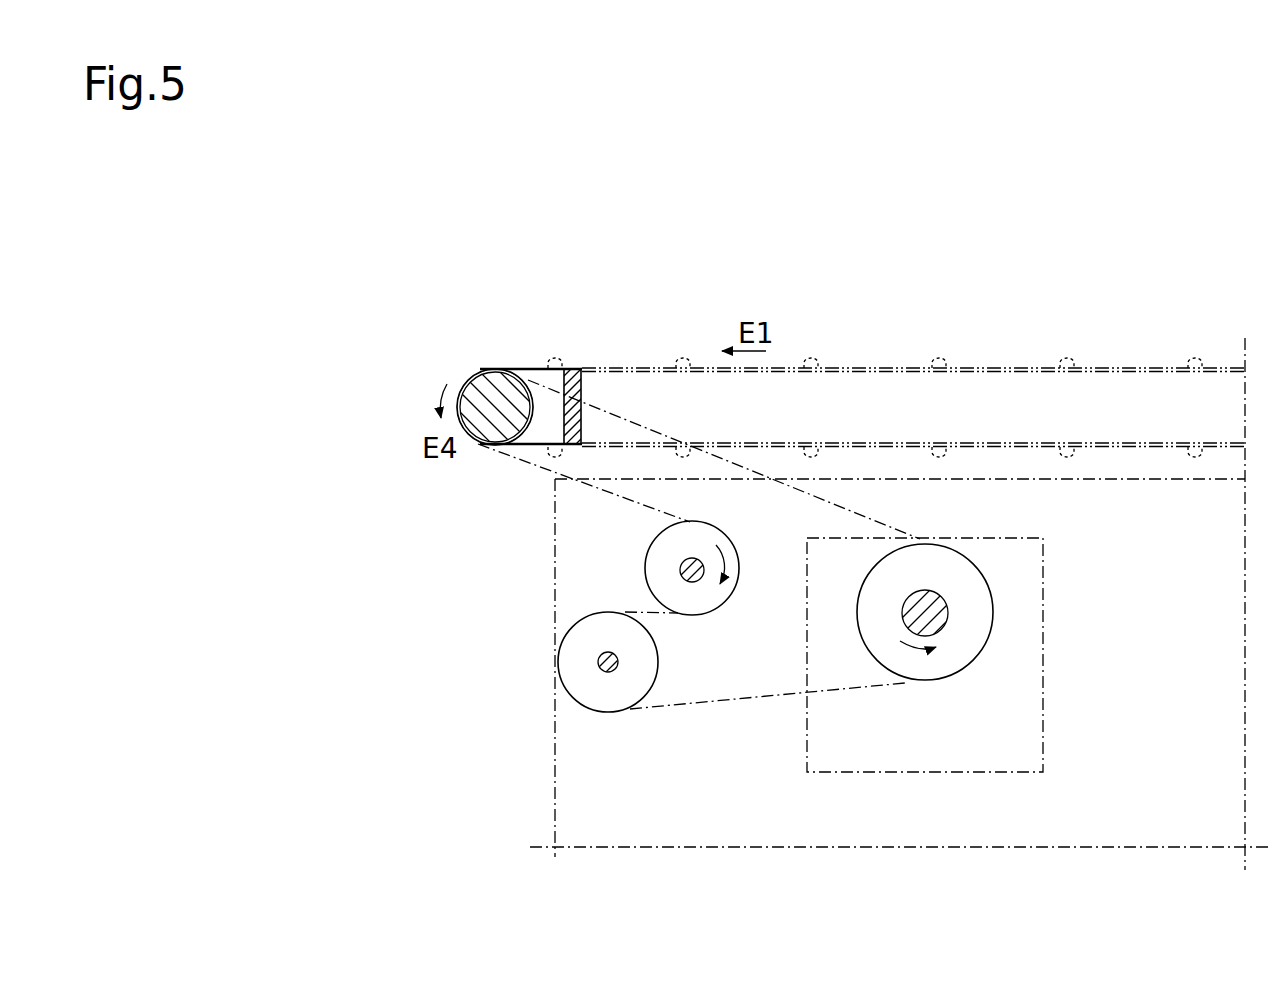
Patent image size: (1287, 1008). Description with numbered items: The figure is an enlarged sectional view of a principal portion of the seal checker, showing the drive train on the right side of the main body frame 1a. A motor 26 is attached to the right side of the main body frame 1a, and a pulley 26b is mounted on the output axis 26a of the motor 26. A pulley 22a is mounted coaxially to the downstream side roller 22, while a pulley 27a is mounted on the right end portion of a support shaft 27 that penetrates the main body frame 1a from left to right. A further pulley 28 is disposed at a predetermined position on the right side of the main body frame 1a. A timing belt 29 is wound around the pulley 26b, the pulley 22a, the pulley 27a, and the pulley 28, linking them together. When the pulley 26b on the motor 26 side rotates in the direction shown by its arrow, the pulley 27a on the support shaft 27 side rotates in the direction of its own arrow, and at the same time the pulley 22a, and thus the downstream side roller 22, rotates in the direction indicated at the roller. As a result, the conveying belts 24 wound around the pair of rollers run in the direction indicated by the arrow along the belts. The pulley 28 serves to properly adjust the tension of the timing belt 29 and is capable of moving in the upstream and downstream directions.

The main body frame 1a is at (553, 788).
The downstream side roller 22 is at (478, 450).
The pulley 22a is at (476, 367).
The conveying belt 24 is at (605, 369).
The motor 26 is at (972, 750).
The output axis 26a is at (942, 618).
The pulley 26b is at (923, 673).
The support shaft 27 is at (697, 579).
The pulley 27a is at (665, 570).
The pulley 28 is at (565, 667).
The timing belt 29 is at (730, 702).